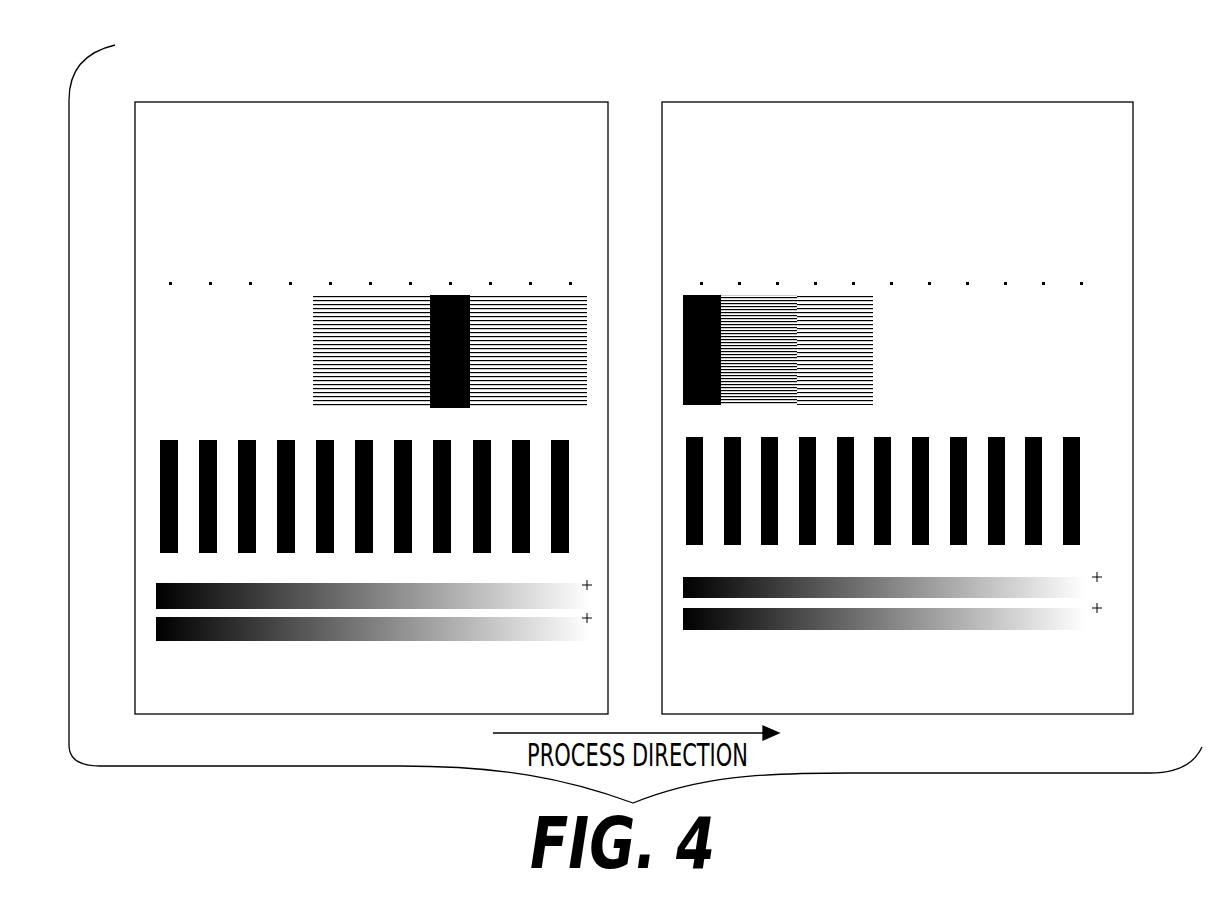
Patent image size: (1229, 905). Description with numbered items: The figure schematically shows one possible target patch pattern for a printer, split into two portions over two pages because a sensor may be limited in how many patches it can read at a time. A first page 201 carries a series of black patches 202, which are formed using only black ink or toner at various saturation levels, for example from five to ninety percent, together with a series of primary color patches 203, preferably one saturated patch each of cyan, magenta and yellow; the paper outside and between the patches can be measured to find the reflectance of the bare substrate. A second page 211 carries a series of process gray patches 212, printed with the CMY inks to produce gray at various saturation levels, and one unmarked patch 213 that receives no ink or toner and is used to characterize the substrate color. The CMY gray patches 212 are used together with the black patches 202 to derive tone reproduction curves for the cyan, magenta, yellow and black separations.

The first page 201 is at (367, 102).
The black patches 202 is at (470, 258).
The primary color patches 203 is at (558, 296).
The second page 211 is at (942, 102).
The process gray patches 212 is at (1065, 258).
The unmarked patch 213 is at (1091, 297).